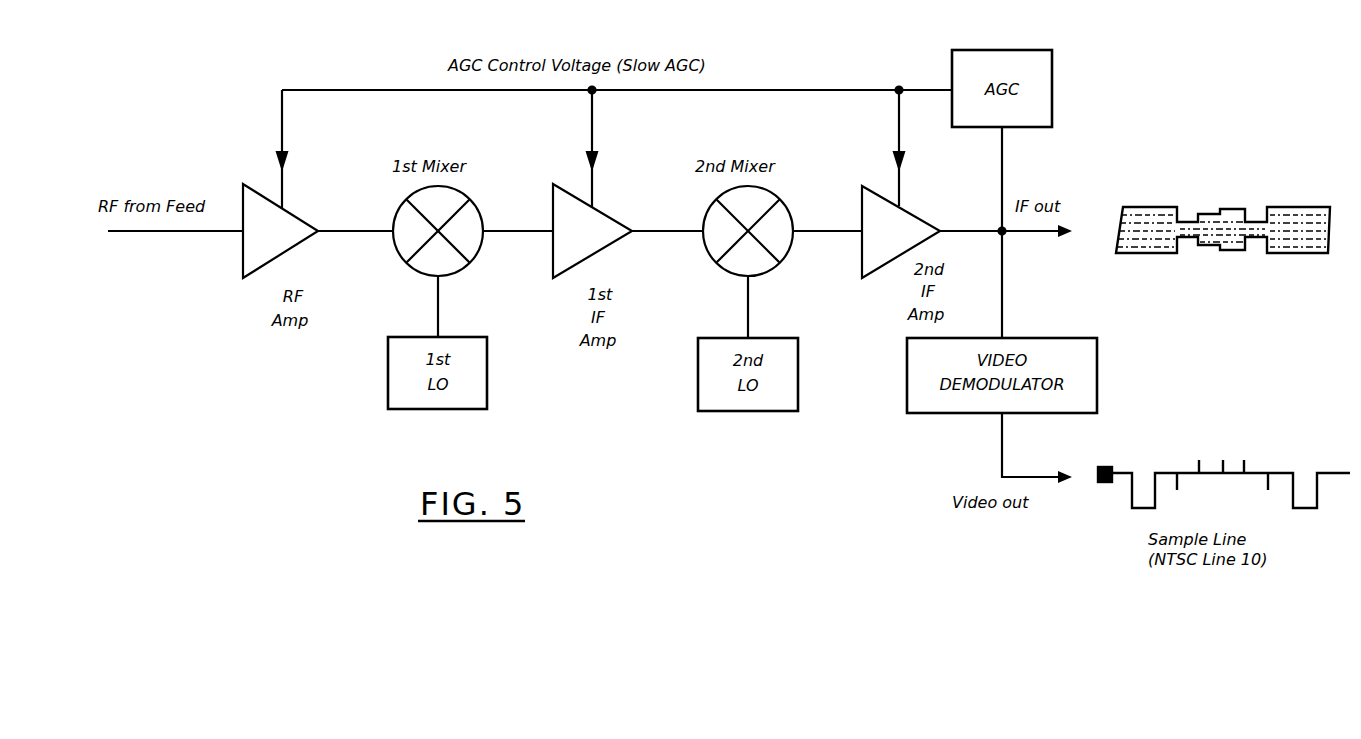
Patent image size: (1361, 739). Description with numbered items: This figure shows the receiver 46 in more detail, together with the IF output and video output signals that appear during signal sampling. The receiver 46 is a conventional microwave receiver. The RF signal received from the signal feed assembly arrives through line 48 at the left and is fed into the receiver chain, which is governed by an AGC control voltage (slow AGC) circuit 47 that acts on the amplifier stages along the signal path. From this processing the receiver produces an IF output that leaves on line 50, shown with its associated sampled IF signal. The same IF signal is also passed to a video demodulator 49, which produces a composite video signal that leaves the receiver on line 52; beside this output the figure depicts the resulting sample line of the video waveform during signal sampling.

The receiver 46 is at (412, 76).
The AGC control voltage (slow AGC) circuit 47 is at (668, 240).
The line 48 is at (168, 232).
The video demodulator 49 is at (1060, 338).
The line 50 is at (1034, 235).
The line 52 is at (1001, 450).